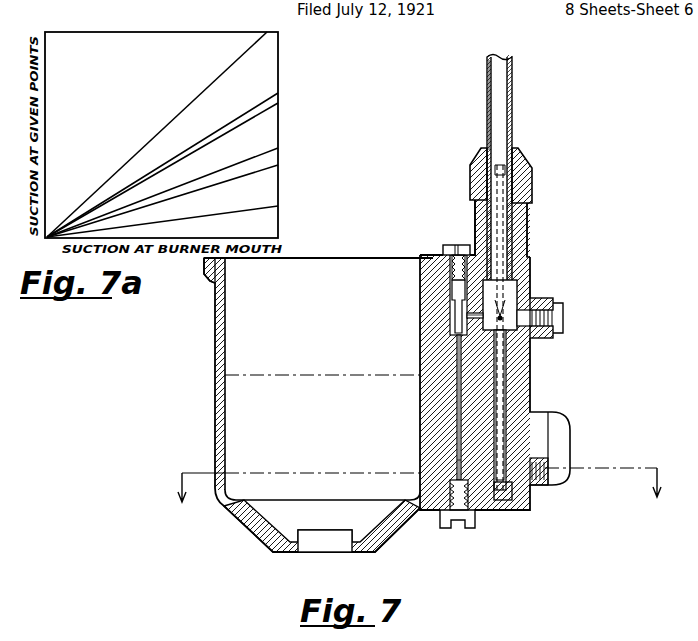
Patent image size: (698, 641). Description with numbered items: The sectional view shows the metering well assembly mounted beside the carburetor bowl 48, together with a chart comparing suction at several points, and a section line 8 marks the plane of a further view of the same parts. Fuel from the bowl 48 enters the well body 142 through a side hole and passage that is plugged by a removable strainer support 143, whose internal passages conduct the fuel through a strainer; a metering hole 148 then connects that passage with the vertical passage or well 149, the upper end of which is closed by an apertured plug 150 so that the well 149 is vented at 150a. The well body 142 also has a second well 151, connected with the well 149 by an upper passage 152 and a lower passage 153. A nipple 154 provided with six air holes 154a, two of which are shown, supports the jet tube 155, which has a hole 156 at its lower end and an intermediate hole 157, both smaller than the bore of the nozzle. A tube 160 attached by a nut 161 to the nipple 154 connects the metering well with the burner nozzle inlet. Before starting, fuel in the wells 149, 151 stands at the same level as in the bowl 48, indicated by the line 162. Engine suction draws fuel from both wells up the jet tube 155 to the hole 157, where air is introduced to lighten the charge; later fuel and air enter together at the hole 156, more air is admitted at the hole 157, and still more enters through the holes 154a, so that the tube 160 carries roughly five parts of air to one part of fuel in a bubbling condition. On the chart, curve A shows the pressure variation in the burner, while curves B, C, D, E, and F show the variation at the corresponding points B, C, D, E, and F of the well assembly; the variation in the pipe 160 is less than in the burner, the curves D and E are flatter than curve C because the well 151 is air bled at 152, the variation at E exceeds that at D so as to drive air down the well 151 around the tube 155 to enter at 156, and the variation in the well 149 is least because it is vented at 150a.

In FIG. 7A, the burner pressure curve A is at (171, 121).
In FIG. 7A, the suction curve and point B is at (240, 122).
In FIG. 7, the suction curve and point B is at (497, 112).
In FIG. 7A, the suction curve and point C is at (232, 122).
In FIG. 7, the suction curve and point C is at (502, 202).
In FIG. 7A, the suction curve and point D is at (247, 176).
In FIG. 7, the suction curve and point D is at (528, 306).
In FIG. 7A, the suction curve and point E is at (225, 168).
In FIG. 7, the suction curve and point E is at (505, 490).
In FIG. 7A, the suction curve and point F is at (215, 215).
In FIG. 7, the suction curve and point F is at (470, 424).
In FIG. 7, the section line 8- 8 is at (419, 500).
In FIG. 7, the bowl 48 is at (215, 365).
In FIG. 7, the well body 142 is at (522, 282).
In FIG. 7, the removable strainer support 143 is at (562, 425).
In FIG. 7, the metering hole 148 is at (465, 460).
In FIG. 7, the vertical passage or well 149 is at (466, 408).
In FIG. 7, the apertured plug 150 is at (447, 249).
In FIG. 7, the vent 150a is at (458, 246).
In FIG. 7, the second well 151 is at (513, 300).
In FIG. 7, the upper passage 152 is at (457, 314).
In FIG. 7, the lower passage 153 is at (484, 472).
In FIG. 7, the nipple 154 is at (528, 236).
In FIG. 7, the air holes 154a is at (478, 232).
In FIG. 7, the jet tube 155 is at (500, 192).
In FIG. 7, the lower hole 156 is at (500, 500).
In FIG. 7, the intermediate hole 157 is at (503, 320).
In FIG. 7, the tube 160 is at (487, 80).
In FIG. 7, the nut 161 is at (478, 157).
In FIG. 7, the fuel level line 162 is at (265, 378).